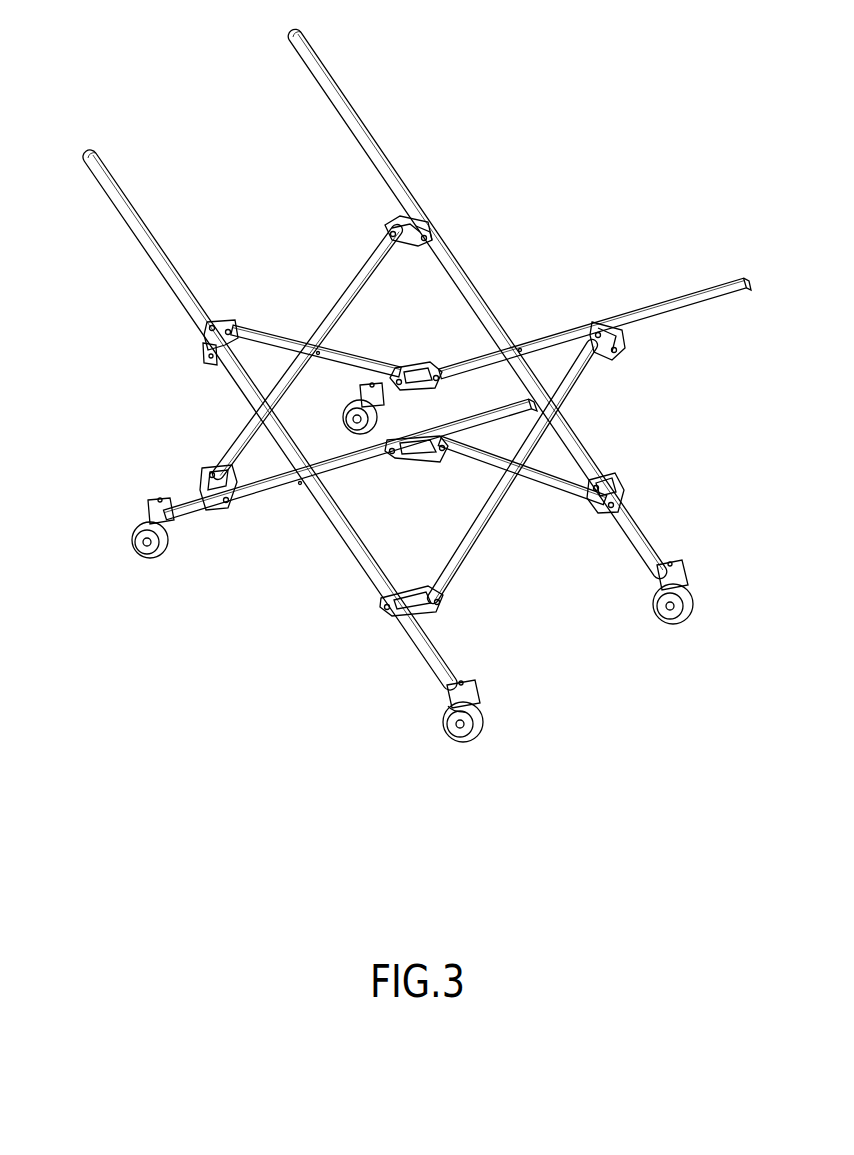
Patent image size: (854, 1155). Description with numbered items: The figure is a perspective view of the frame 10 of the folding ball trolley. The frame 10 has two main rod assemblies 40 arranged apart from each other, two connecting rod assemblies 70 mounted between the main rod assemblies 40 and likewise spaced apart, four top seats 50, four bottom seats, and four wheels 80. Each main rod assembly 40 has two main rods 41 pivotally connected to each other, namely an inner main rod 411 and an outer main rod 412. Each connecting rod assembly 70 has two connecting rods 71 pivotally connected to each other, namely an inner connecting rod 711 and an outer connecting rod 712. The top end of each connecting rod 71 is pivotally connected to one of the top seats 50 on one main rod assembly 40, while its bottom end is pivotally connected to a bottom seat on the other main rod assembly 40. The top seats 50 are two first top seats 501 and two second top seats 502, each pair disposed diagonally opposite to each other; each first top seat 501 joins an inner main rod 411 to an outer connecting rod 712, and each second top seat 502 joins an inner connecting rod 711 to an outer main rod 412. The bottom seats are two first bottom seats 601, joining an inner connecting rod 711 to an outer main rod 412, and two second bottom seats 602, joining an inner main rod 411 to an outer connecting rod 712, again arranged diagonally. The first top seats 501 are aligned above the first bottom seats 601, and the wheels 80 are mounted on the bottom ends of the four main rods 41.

The frame 10 is at (178, 423).
The main rod assembly 40 is at (301, 533).
The main rod 41 is at (273, 492).
The inner main rod 411 is at (480, 296).
The outer main rod 412 is at (566, 328).
The top seat 50 is at (416, 223).
The first top seat 501 is at (432, 236).
The second top seat 502 is at (224, 322).
The first bottom seat 601 is at (414, 364).
The second bottom seat 602 is at (208, 470).
The connecting rod assembly 70 is at (520, 531).
The connecting rod 71 is at (460, 550).
The inner connecting rod 711 is at (268, 332).
The outer connecting rod 712 is at (360, 262).
The wheel 80 is at (479, 740).